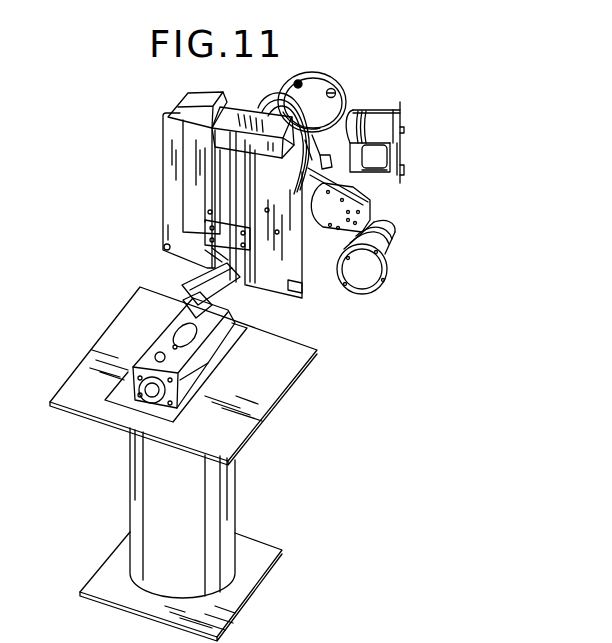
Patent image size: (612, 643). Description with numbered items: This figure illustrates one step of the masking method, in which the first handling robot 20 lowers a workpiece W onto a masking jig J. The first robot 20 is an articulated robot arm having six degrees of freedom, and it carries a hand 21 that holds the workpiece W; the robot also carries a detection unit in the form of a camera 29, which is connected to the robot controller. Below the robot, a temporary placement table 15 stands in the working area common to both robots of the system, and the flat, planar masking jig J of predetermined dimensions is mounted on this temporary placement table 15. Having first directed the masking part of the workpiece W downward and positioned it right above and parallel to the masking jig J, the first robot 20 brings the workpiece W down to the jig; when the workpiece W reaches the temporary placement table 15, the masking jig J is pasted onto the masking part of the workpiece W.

The first handling robot 20 is at (432, 120).
The hand 21 is at (210, 288).
The camera 29 is at (378, 288).
The temporary placement table 15 is at (262, 398).
The workpiece W is at (143, 350).
The masking jig J is at (123, 402).